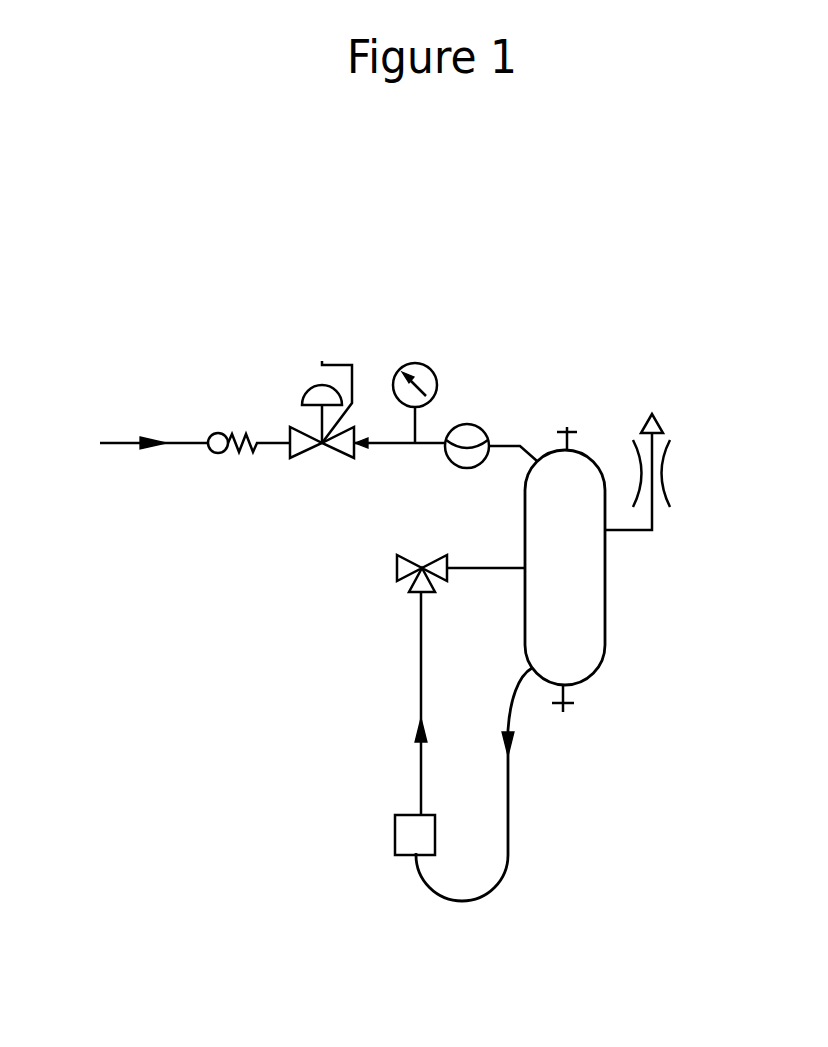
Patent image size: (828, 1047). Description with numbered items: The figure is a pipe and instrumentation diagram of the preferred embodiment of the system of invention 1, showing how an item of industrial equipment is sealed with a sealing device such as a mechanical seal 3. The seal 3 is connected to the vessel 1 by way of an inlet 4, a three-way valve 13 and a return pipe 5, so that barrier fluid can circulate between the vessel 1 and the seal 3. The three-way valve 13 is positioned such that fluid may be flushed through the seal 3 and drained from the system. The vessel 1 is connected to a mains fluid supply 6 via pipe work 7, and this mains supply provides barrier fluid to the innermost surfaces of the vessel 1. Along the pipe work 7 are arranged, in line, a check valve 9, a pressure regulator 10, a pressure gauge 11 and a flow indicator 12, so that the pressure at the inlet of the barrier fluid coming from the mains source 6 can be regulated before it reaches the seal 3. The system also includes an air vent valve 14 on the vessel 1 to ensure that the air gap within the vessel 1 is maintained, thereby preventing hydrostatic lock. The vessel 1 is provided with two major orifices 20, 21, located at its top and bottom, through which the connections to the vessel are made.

The vessel 1 is at (160, 350).
The mechanical seal 3 is at (394, 834).
The inlet 4 is at (508, 675).
The return pipe 5 is at (488, 542).
The mains fluid supply 6 is at (139, 443).
The pipe work 7 is at (524, 420).
The check valve 9 is at (218, 400).
The pressure regulator 10 is at (322, 337).
The pressure gauge 11 is at (410, 334).
The flow indicator 12 is at (467, 397).
The three-way valve 13 is at (397, 568).
The air vent valve 14 is at (652, 384).
The major orifice 20 is at (567, 404).
The major orifice 21 is at (563, 734).